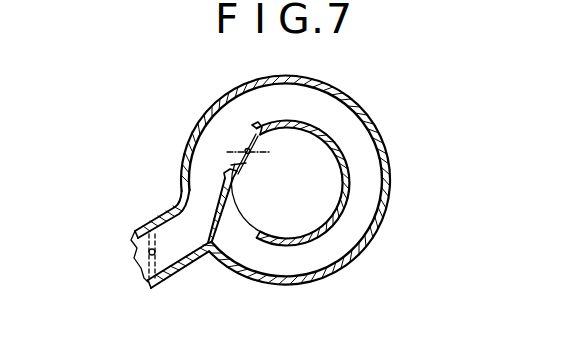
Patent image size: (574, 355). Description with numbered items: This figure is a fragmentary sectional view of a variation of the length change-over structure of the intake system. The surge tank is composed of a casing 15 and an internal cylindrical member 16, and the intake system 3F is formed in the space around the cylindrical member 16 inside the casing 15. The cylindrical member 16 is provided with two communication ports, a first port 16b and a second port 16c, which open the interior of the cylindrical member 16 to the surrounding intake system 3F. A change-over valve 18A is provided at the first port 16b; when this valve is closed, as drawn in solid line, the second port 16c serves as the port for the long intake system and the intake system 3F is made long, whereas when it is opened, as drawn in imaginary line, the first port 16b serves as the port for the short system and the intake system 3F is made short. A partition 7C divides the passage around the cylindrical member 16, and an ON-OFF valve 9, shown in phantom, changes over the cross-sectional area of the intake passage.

The intake system 3F is at (270, 168).
The casing 15 is at (388, 174).
The internal cylindrical member 16 is at (343, 153).
The first communication port 16b is at (240, 167).
The second communication port 16c is at (240, 223).
The change-over valve 18A is at (253, 142).
The partition 7C is at (165, 233).
The ON-OFF valve 9 is at (145, 263).